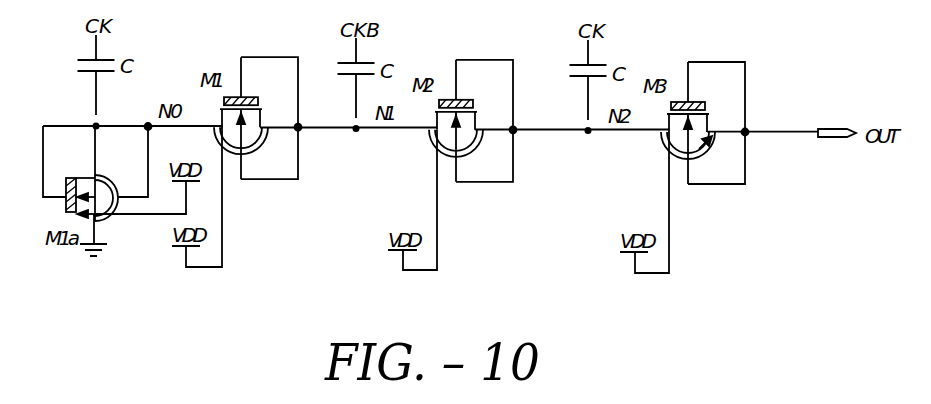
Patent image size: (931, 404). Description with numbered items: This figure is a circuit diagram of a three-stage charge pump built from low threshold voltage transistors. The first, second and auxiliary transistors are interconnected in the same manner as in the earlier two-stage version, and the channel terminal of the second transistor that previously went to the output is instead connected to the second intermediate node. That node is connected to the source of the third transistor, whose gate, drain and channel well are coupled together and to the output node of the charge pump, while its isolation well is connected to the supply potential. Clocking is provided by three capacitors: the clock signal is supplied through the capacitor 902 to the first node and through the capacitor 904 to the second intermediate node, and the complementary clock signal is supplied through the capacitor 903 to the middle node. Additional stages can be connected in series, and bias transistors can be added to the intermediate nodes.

The capacitor 902 is at (92, 57).
The capacitor 903 is at (352, 60).
The capacitor 904 is at (583, 63).